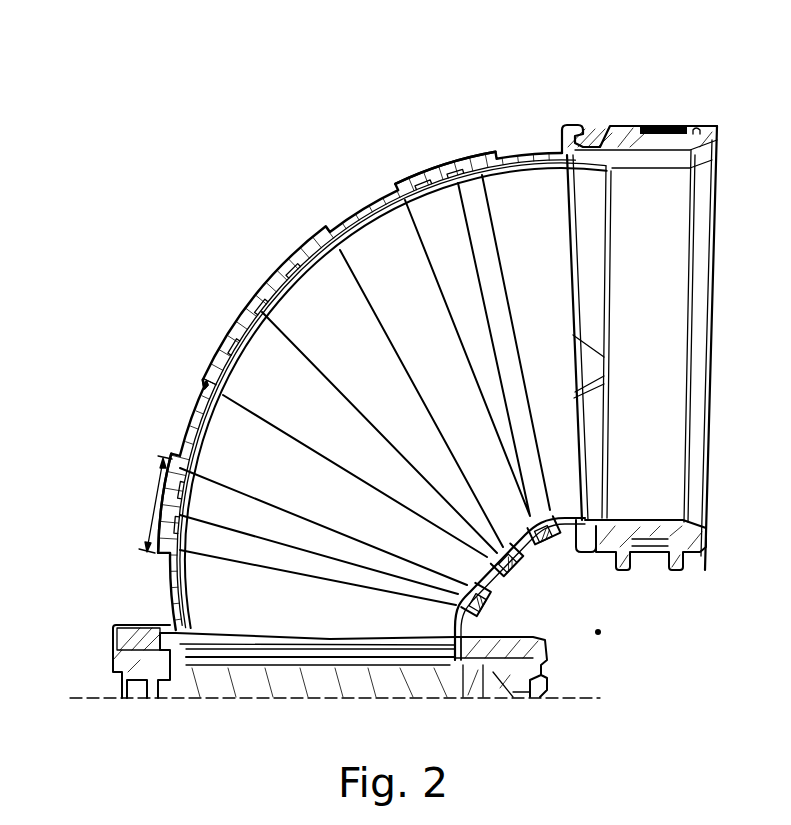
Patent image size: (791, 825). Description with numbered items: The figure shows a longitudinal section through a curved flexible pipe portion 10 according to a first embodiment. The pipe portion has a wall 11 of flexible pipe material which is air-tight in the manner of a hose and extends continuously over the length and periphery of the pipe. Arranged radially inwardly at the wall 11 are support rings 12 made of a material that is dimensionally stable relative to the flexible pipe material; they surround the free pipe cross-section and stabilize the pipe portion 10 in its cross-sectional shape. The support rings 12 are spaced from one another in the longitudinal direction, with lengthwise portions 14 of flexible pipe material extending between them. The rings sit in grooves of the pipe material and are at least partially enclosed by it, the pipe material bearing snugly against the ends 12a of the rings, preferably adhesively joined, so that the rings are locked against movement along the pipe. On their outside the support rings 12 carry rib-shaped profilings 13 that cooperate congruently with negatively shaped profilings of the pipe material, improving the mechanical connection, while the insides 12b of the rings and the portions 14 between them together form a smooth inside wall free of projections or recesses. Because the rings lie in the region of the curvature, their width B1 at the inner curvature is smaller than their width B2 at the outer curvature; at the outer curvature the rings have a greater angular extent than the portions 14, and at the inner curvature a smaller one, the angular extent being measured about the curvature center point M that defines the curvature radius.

The flexible pipe portion 10 is at (316, 152).
The wall 11 is at (384, 242).
The support rings 12 is at (257, 303).
The ends of the support rings 12a is at (558, 128).
The insides of the support ring 12b is at (230, 353).
The rib-shaped profilings 13 is at (423, 163).
The lengthwise portions of flexible pipe material 14 is at (200, 428).
The width of the support rings in the region of the inner curvature B1 is at (547, 552).
The width of the support rings in the region of the outer curvature B2 is at (150, 497).
The curvature center point M is at (603, 636).